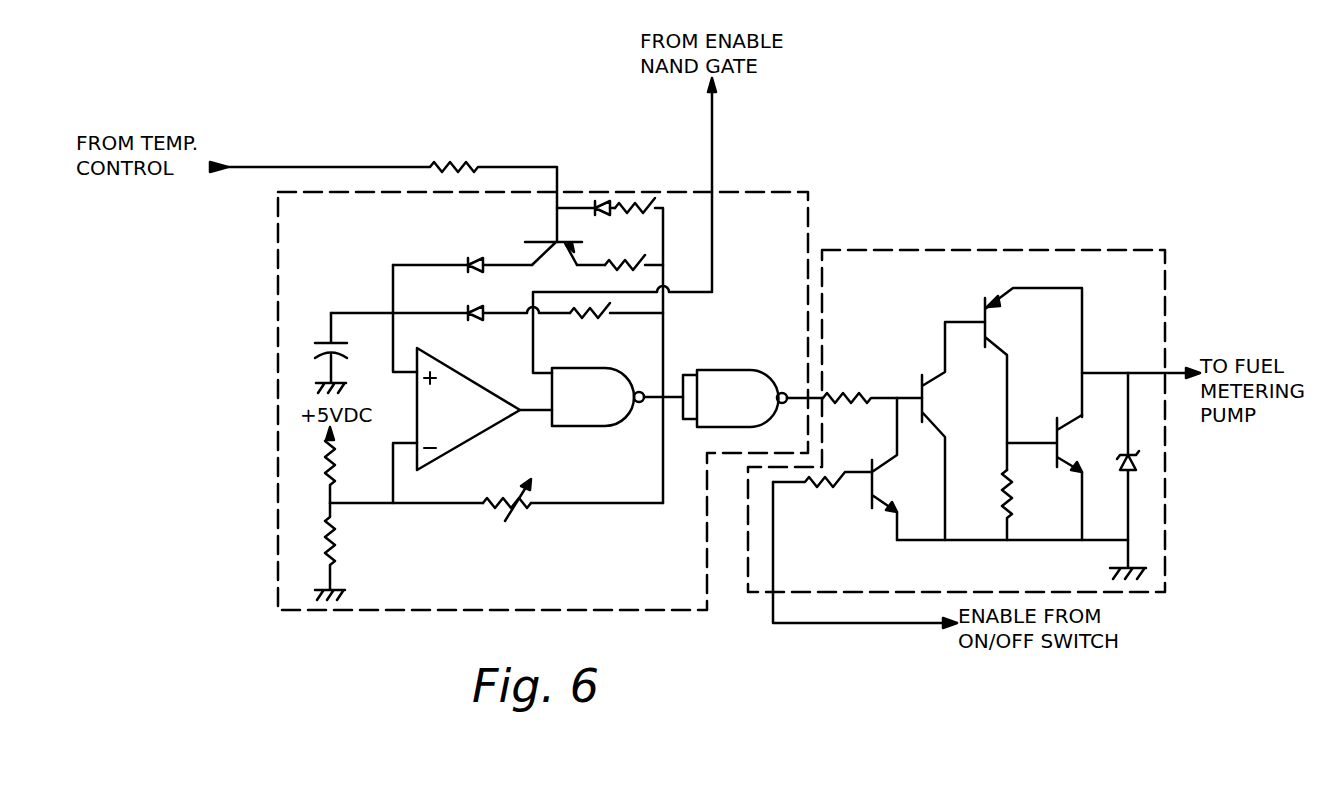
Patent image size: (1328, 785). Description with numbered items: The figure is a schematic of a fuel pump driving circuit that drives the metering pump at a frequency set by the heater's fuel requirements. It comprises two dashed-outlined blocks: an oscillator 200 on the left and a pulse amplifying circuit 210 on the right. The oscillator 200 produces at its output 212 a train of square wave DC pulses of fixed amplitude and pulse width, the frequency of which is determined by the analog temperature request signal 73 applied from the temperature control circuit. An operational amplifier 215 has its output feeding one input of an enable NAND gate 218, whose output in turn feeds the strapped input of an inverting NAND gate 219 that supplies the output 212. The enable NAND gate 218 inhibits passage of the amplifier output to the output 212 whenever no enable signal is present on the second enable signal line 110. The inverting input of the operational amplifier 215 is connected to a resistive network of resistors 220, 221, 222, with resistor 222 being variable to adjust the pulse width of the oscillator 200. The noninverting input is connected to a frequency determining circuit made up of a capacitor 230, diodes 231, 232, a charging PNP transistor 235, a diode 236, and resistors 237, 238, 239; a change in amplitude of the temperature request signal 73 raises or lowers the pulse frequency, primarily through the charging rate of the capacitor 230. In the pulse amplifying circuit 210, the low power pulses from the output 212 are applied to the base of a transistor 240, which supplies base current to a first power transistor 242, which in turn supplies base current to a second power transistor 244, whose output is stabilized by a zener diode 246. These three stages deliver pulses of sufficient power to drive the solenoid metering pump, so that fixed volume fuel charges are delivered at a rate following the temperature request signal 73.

The temperature request signal 73 is at (317, 165).
The second enable signal line 110 is at (712, 170).
The oscillator 200 is at (278, 477).
The pulse amplifying circuit 210 is at (878, 250).
The output 212 is at (812, 398).
The operational amplifier 215 is at (468, 378).
The enable NAND gate 218 is at (571, 427).
The inverting NAND gate 219 is at (712, 369).
The resistor 220 is at (354, 465).
The resistor 221 is at (336, 540).
The variable resistor 222 is at (522, 509).
The capacitor 230 is at (328, 342).
The diode 231 is at (480, 258).
The diode 232 is at (494, 297).
The charging PNP transistor 235 is at (555, 247).
The diode 236 is at (600, 200).
The resistor 237 is at (588, 320).
The resistor 238 is at (609, 262).
The resistor 239 is at (637, 205).
The transistor 240 is at (920, 386).
The first power transistor 242 is at (989, 322).
The second power transistor 244 is at (1060, 444).
The zener diode 246 is at (1138, 463).